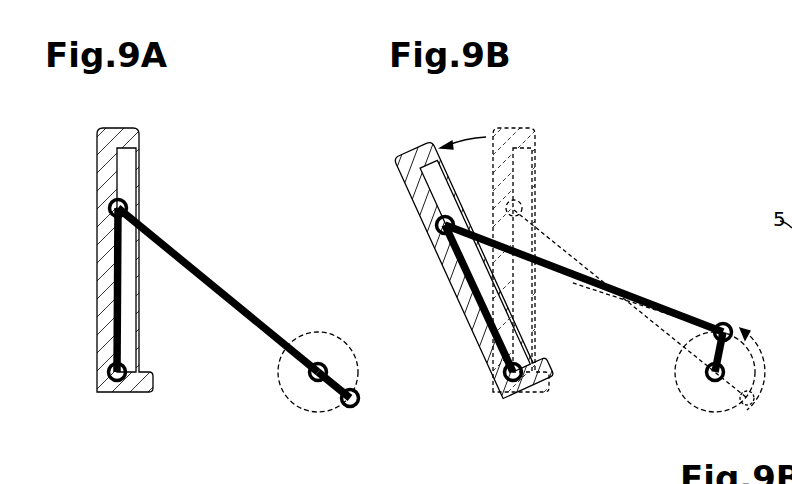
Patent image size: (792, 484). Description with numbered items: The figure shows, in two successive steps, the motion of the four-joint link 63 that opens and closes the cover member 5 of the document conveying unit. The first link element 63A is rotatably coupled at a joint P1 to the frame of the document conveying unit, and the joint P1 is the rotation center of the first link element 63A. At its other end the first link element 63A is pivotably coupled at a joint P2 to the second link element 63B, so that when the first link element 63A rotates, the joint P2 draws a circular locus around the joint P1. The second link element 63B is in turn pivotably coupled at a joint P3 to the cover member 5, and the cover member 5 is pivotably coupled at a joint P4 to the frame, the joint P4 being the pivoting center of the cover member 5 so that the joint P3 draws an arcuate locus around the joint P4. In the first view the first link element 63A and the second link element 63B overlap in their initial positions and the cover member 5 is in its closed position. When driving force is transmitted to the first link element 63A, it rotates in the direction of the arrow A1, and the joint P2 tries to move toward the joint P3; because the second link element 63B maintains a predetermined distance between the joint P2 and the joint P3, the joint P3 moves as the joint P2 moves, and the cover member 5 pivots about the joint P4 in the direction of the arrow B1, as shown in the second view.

In FIG. 9A, the cover member 5 is at (97, 143).
In FIG. 9B, the cover member 5 is at (398, 160).
In FIG. 9A, the four-joint link 63 is at (268, 205).
In FIG. 9B, the four-joint link 63 is at (612, 204).
In FIG. 9A, the first link element 63A is at (334, 386).
In FIG. 9B, the first link element 63A is at (705, 353).
In FIG. 9A, the second link element 63B is at (220, 288).
In FIG. 9B, the second link element 63B is at (662, 306).
In FIG. 9A, the joint P1 is at (325, 362).
In FIG. 9B, the joint P1 is at (706, 376).
In FIG. 9A, the joint P2 is at (358, 398).
In FIG. 9B, the joint P2 is at (727, 325).
In FIG. 9A, the joint P3 is at (126, 206).
In FIG. 9B, the joint P3 is at (437, 230).
In FIG. 9A, the joint P4 is at (118, 382).
In FIG. 9B, the joint P4 is at (504, 372).
In FIG. 9B, the arrow B1 is at (463, 130).
In FIG. 9B, the arrow A1 is at (766, 369).